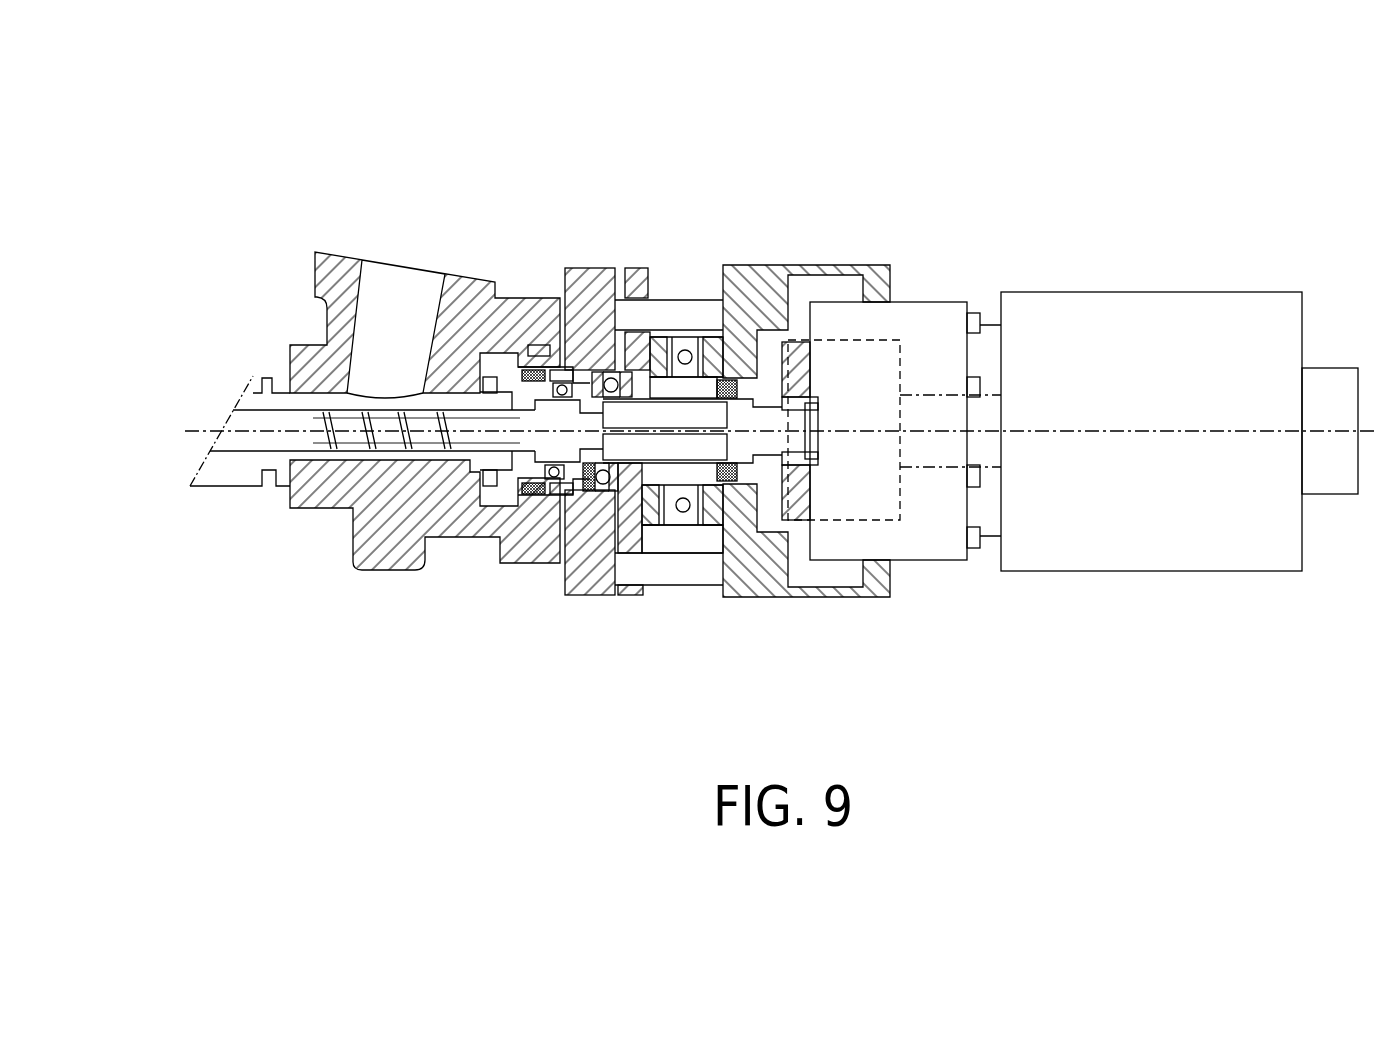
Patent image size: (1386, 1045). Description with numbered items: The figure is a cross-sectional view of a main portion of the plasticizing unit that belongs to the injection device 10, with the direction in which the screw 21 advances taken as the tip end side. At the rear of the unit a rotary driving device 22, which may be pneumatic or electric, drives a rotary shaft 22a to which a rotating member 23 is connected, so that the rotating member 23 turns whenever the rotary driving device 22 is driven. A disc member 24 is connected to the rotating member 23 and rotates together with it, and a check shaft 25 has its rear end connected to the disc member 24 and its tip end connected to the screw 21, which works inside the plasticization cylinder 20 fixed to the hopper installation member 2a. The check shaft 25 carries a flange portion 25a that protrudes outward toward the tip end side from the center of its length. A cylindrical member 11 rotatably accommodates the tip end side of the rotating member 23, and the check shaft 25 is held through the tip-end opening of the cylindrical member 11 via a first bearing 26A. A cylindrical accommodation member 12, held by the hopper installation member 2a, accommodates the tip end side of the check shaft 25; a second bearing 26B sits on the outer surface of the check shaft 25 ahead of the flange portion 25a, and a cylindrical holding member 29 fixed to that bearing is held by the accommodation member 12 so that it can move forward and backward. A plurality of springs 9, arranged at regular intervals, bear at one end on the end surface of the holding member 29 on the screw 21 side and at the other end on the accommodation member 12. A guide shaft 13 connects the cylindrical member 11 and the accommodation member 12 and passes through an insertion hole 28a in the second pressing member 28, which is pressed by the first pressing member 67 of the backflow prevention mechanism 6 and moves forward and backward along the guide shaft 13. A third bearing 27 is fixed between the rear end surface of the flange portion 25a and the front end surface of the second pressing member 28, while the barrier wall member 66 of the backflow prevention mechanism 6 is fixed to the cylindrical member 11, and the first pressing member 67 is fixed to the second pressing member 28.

The hopper installation member 2a is at (368, 568).
The backflow prevention mechanism 6 is at (712, 337).
The springs 9 is at (525, 345).
The injection device 10 is at (776, 265).
The cylindrical member 11 is at (762, 442).
The accommodation member 12 is at (578, 268).
The guide shaft 13 is at (700, 378).
The plasticization cylinder 20 is at (262, 378).
The screw 21 is at (347, 448).
The rotary driving device 22 is at (1176, 292).
The rotary shaft 22a is at (928, 403).
The rotating member 23 is at (888, 350).
The disc member 24 is at (812, 302).
The check shaft 25 is at (796, 472).
The flange portion 25a is at (575, 494).
The first bearing 26A is at (732, 482).
The second bearing 26B is at (530, 492).
The third bearing 27 is at (600, 372).
The second pressing member 28 is at (628, 268).
The insertion hole 28a is at (650, 268).
The holding member 29 is at (555, 480).
The barrier wall member 66 is at (691, 352).
The first pressing member 67 is at (640, 332).